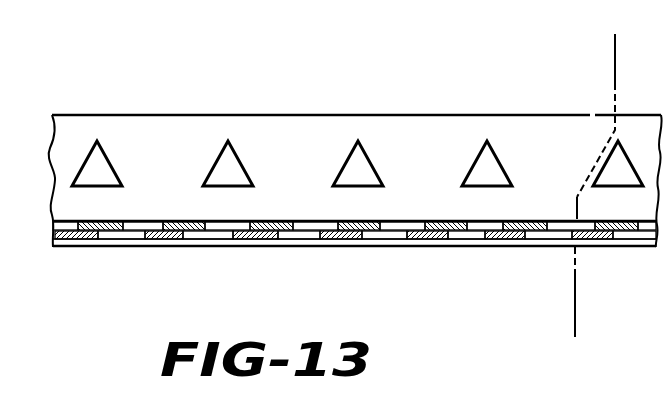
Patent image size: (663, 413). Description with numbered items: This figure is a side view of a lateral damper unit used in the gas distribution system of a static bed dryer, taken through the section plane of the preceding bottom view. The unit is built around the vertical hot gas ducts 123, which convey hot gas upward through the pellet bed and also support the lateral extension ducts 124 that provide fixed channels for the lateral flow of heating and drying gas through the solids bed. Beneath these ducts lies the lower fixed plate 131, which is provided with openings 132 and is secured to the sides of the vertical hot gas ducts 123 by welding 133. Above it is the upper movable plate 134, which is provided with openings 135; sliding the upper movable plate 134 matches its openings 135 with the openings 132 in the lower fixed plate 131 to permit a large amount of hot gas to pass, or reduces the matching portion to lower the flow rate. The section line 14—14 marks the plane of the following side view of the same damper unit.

The vertical hot gas duct 123 is at (410, 150).
The lateral extension duct 124 is at (240, 158).
The lower fixed plate 131 is at (502, 237).
The openings 132 is at (200, 236).
The welding 133 is at (98, 247).
The upper movable plate 134 is at (173, 220).
The openings 135 is at (232, 220).
The section line 14- 14 is at (606, 42).